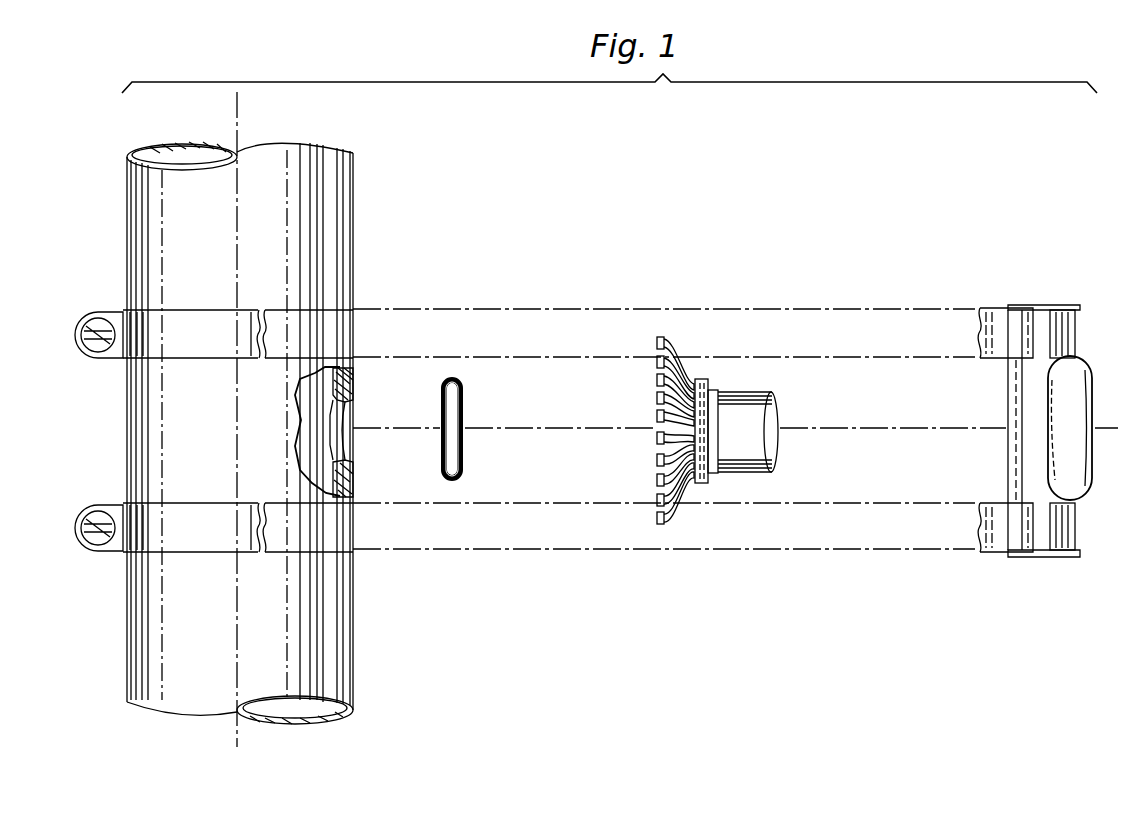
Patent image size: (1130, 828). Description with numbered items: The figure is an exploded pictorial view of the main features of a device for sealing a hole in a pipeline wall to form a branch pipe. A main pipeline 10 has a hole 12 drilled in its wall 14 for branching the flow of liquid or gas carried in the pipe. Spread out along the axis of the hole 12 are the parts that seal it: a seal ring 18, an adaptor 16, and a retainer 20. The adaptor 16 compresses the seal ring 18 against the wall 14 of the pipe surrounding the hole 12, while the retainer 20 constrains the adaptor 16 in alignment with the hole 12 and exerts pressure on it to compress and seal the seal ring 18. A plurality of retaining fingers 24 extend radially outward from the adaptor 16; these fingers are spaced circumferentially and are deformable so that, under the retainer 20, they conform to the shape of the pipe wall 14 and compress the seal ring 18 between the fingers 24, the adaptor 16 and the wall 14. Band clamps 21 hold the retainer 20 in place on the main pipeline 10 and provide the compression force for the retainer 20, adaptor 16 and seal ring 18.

The main pipeline 10 is at (298, 205).
The hole 12 is at (340, 418).
The wall 14 is at (350, 487).
The adaptor 16 is at (710, 483).
The seal ring 18 is at (458, 481).
The retainer 20 is at (1042, 557).
The band clamps 21 is at (187, 527).
The retaining fingers 24 is at (657, 484).